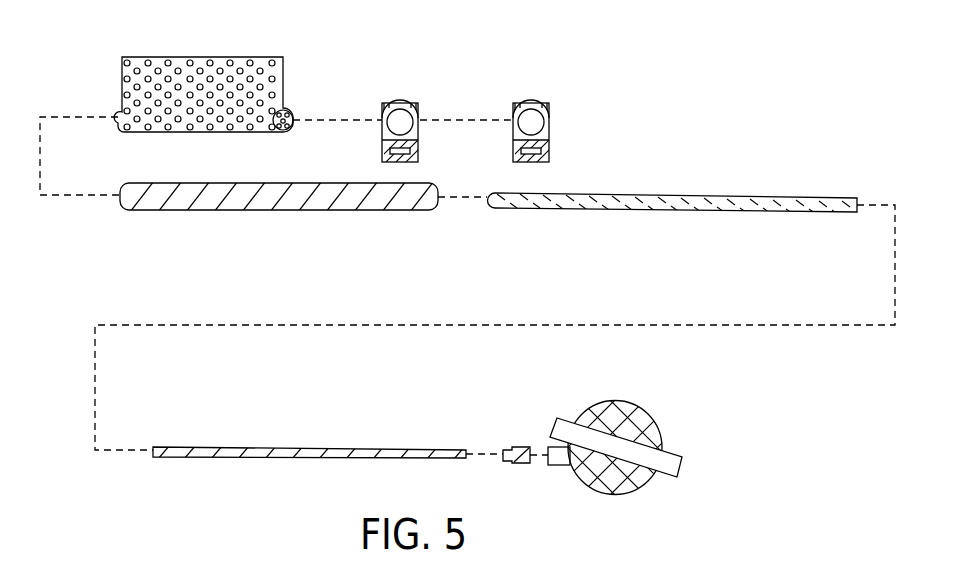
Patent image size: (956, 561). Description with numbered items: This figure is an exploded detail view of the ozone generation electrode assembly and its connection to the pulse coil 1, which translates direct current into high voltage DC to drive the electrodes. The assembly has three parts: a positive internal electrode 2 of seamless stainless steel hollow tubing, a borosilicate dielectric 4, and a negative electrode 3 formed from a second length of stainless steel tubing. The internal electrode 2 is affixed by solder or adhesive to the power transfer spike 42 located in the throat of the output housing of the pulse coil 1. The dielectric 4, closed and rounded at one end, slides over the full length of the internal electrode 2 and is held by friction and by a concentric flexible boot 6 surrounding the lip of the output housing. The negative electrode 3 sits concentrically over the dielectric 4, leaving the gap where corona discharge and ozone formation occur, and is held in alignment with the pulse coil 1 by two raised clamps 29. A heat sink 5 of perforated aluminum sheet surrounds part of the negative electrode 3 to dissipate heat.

The heat sink 5 is at (283, 80).
The raised clamps 29 is at (513, 117).
The negative electrode 3 is at (295, 211).
The dielectric 4 is at (696, 210).
The positive electrode 2 is at (305, 448).
The flexible boot 6 is at (522, 447).
The power transfer spike 42 is at (560, 465).
The pulse coil 1 is at (656, 434).